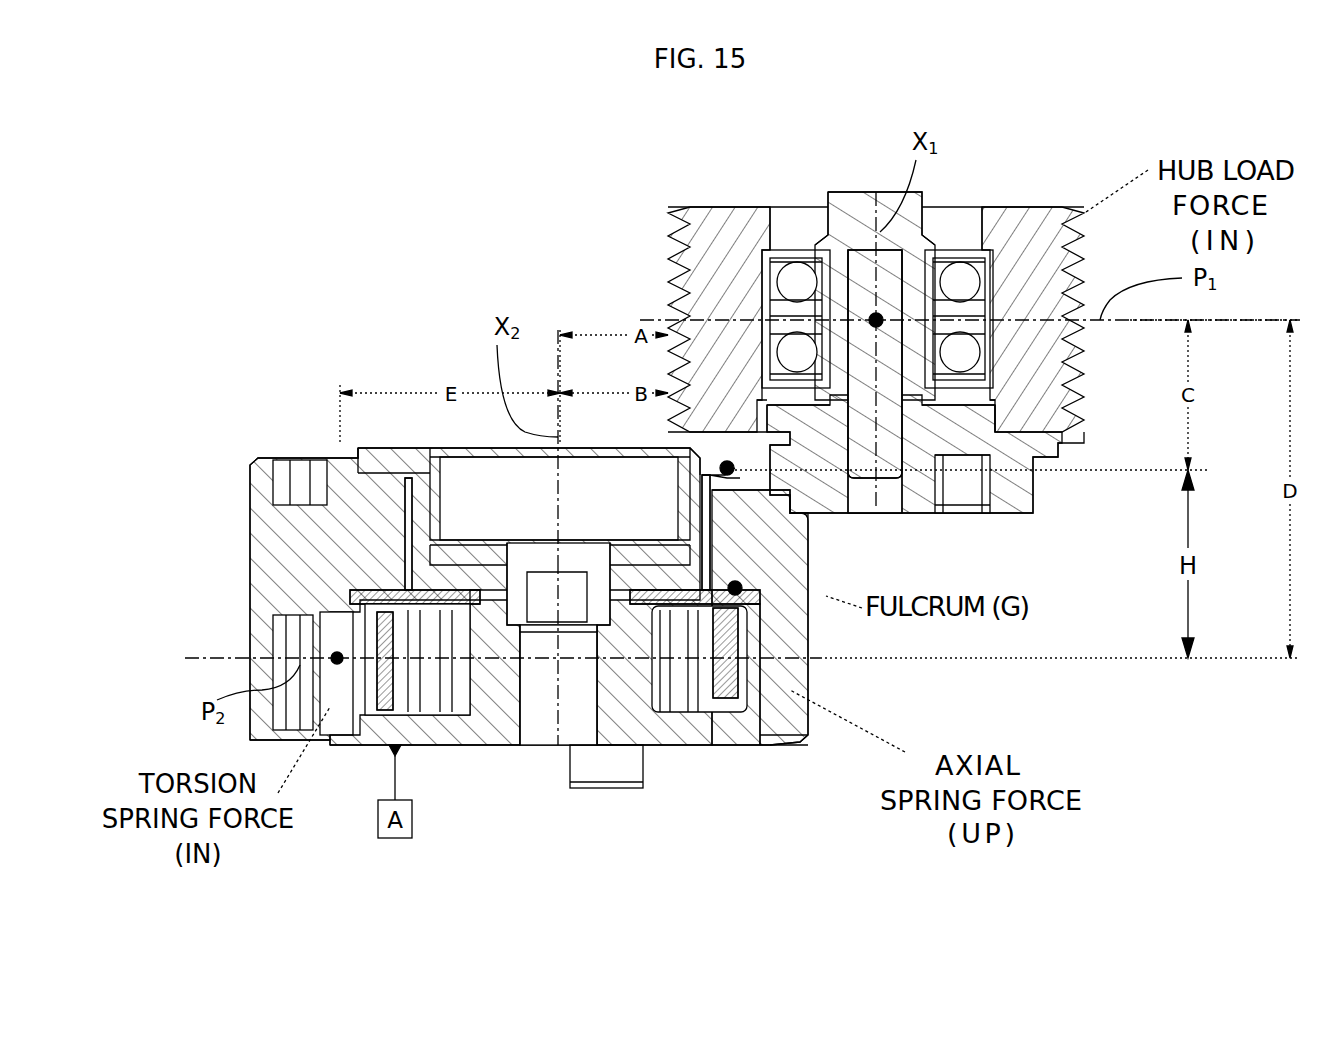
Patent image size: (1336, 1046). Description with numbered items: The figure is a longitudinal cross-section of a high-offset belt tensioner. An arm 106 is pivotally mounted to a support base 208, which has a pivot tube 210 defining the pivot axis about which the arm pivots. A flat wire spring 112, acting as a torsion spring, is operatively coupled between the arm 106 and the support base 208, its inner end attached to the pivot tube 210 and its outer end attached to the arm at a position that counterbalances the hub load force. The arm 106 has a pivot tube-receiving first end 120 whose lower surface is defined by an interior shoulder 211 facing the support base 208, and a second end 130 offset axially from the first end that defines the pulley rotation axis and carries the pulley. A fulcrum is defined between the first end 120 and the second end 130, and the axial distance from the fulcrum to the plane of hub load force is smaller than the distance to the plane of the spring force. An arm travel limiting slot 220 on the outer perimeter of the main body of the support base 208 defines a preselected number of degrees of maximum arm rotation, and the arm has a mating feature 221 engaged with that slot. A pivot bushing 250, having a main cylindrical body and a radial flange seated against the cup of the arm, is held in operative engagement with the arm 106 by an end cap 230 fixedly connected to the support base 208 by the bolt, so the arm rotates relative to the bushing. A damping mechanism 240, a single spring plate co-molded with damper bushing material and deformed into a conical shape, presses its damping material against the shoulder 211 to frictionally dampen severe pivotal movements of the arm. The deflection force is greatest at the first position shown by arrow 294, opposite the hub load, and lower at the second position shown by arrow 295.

The arm 106 is at (812, 520).
The flat wire spring 112 is at (712, 690).
The pivot tube-receiving first end 120 is at (250, 518).
The second end 130 is at (1063, 505).
The support base 208 is at (365, 752).
The pivot tube 210 is at (605, 680).
The interior shoulder 211 is at (360, 600).
The arm travel limiting slot 220 is at (755, 748).
The mating feature 221 is at (785, 720).
The end cap 230 is at (412, 448).
The damping mechanism 240 is at (265, 648).
The pivot bushing 250 is at (400, 533).
The arrow 294 is at (735, 675).
The arrow 295 is at (388, 684).